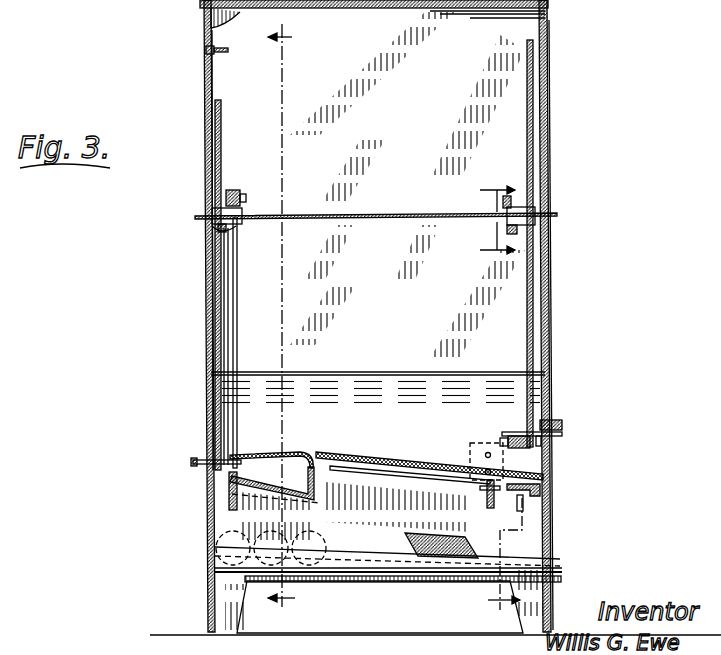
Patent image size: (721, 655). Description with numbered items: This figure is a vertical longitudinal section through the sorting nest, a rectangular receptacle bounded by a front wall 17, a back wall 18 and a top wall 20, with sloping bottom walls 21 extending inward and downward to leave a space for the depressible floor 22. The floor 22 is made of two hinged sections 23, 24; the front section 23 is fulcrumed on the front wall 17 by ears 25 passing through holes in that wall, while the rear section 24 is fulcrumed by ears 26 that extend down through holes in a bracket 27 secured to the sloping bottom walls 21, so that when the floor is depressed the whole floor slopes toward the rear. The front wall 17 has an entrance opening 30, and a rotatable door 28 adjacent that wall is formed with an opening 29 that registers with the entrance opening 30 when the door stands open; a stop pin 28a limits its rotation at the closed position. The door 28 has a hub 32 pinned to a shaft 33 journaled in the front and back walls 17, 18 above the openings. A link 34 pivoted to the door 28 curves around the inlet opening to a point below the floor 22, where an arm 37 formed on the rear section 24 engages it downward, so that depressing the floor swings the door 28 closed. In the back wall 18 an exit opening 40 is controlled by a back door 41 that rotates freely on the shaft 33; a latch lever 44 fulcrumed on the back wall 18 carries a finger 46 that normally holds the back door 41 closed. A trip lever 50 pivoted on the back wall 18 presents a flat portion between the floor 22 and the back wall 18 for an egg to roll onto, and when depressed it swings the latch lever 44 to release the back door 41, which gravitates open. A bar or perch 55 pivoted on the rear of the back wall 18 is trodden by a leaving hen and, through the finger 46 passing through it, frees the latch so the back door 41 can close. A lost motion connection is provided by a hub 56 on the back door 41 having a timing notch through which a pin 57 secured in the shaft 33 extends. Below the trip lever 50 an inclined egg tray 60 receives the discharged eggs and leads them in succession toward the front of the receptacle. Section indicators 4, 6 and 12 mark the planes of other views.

The front wall 17 is at (204, 76).
The back wall 18 is at (547, 82).
The top wall 20 is at (212, 20).
The sloping bottom walls 21 is at (340, 386).
The depressible floor 22 is at (372, 452).
The front floor section 23 is at (270, 455).
The rear floor section 24 is at (418, 467).
The ears 25 is at (196, 464).
The ears 26 is at (523, 506).
The bracket 27 is at (480, 483).
The door 28 is at (216, 183).
The pin 28a is at (222, 54).
The opening 29 is at (224, 306).
The entrance opening 30 is at (211, 347).
The hub 32 is at (222, 226).
The shaft 33 is at (370, 213).
The link 34 is at (237, 348).
The arm 37 is at (262, 488).
The exit opening 40 is at (551, 302).
The back door 41 is at (533, 138).
The latch lever 44 is at (522, 434).
The finger 46 is at (562, 434).
The trip lever 50 is at (543, 494).
The bar or perch 55 is at (548, 418).
The hub 56 is at (522, 211).
The pin 57 is at (517, 229).
The egg tray 60 is at (360, 578).
The section line 4 is at (288, 22).
The section line 6 is at (504, 626).
The section line 12 is at (500, 186).